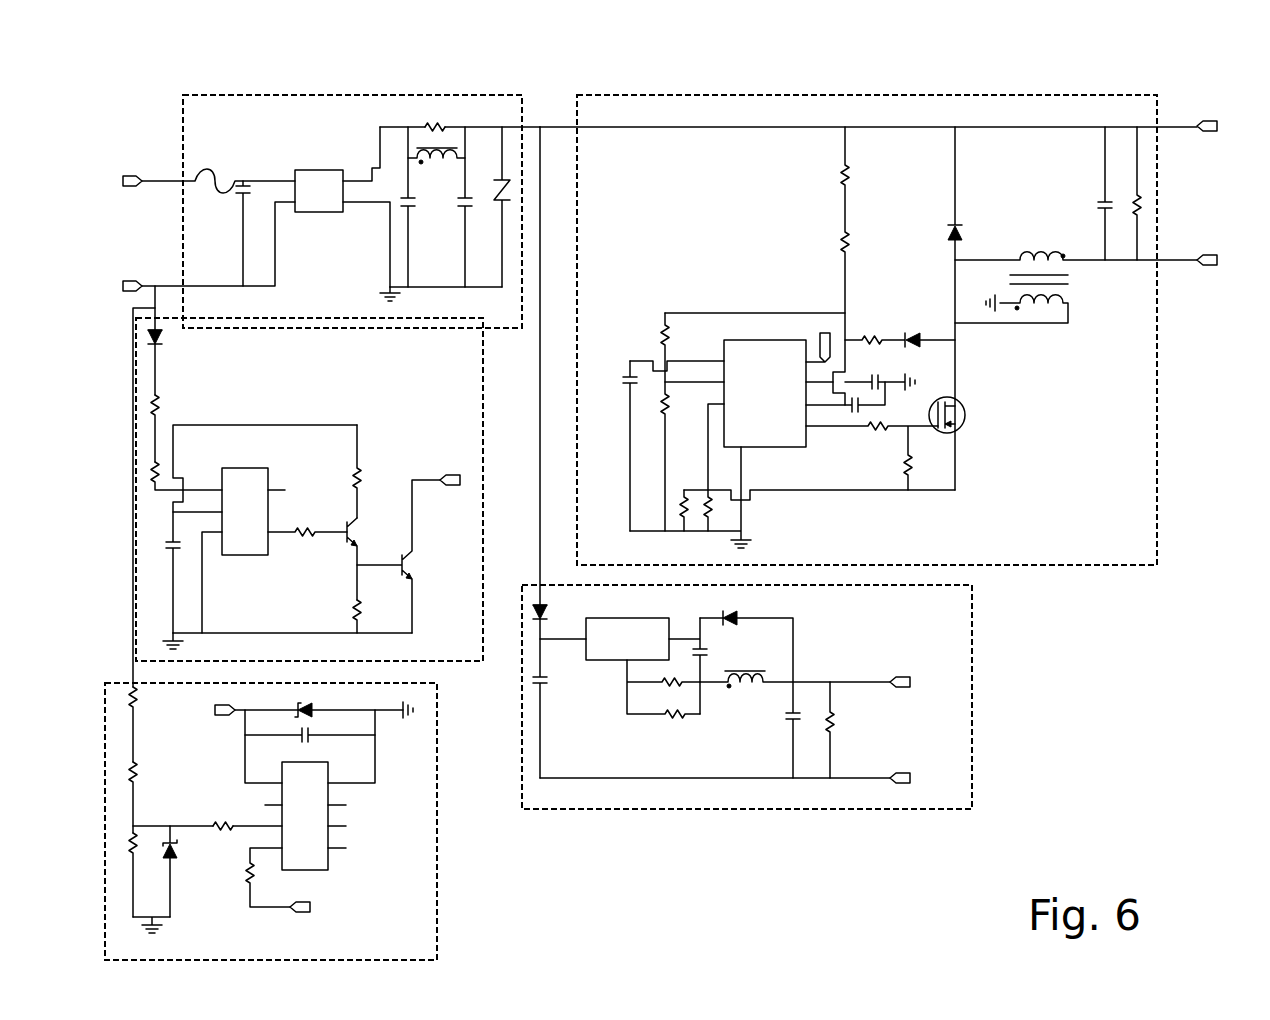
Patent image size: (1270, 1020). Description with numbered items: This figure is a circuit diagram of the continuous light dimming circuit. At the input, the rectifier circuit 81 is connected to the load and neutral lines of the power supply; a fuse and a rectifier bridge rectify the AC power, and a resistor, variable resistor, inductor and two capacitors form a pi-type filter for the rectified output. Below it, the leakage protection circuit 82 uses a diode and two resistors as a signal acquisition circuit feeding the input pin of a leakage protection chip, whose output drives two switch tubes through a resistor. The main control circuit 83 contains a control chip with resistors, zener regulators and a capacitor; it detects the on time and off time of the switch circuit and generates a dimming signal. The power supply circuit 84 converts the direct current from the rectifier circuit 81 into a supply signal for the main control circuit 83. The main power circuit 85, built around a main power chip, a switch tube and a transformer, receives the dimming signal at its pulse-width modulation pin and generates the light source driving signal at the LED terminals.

The rectifier circuit 81 is at (323, 95).
The leakage protection circuit 82 is at (483, 428).
The main control circuit 83 is at (437, 790).
The power supply circuit 84 is at (972, 665).
The main power circuit 85 is at (935, 95).